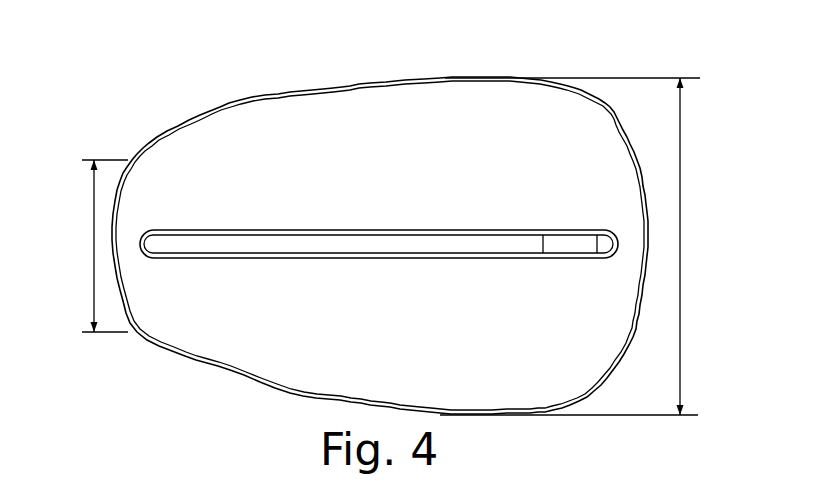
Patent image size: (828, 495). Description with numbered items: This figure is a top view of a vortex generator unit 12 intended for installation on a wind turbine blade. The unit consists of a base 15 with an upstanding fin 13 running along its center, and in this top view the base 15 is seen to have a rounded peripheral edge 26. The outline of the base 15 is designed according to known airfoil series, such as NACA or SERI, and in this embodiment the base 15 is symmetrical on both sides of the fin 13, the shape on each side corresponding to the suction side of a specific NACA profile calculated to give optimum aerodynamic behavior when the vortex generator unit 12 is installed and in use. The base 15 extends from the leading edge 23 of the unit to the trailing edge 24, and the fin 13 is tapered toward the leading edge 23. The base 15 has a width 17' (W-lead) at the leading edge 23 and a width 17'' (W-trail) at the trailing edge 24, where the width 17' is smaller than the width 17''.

The vortex generator unit 12 is at (237, 102).
The fin 13 is at (354, 246).
The base 15 is at (378, 267).
The leading edge 23 is at (112, 145).
The trailing edge 24 is at (628, 112).
The rounded peripheral edge 26 is at (333, 88).
The width at the leading edge (W-lead) 17' is at (95, 246).
The width at the trailing edge (W-trail) 17'' is at (582, 246).